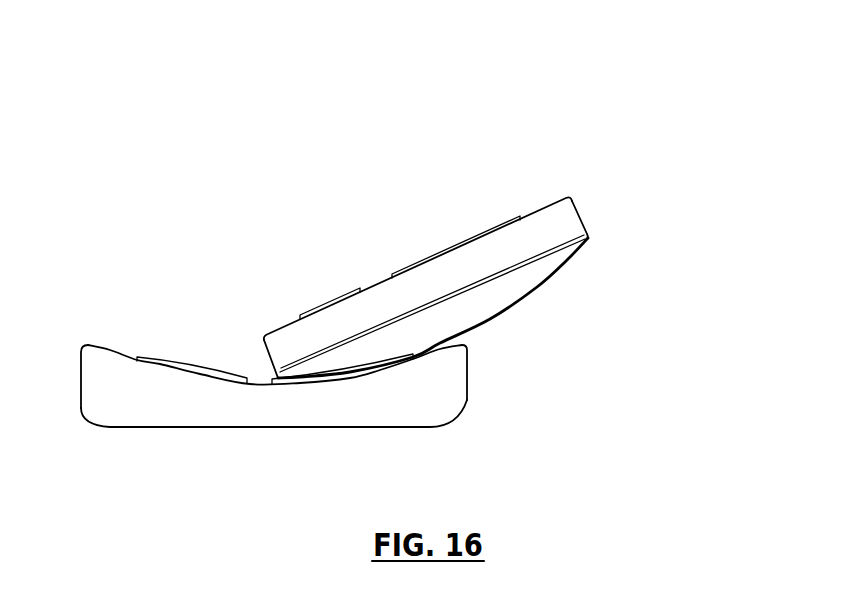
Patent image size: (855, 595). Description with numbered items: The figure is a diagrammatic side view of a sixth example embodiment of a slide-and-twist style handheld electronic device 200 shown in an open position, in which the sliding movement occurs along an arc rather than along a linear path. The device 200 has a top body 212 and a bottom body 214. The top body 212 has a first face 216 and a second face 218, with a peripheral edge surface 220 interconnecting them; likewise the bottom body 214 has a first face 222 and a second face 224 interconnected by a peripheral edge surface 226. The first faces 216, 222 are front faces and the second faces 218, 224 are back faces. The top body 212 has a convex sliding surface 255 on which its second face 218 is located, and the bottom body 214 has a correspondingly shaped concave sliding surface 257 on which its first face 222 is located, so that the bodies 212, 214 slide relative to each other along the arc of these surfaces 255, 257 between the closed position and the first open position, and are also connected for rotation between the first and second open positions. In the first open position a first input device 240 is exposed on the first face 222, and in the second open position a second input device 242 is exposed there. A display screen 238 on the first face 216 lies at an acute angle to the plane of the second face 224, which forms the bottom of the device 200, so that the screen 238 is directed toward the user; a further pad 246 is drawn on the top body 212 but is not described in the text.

The handheld electronic device 200 is at (631, 167).
The top body 212 is at (480, 247).
The bottom body 214 is at (306, 381).
The first face of the top body 216 is at (534, 211).
The second face of the top body 218 is at (518, 285).
The peripheral edge surface of the top body 220 is at (366, 313).
The first face of the bottom body 222 is at (110, 350).
The second face of the bottom body 224 is at (170, 428).
The peripheral edge surface of the bottom body 226 is at (305, 419).
The display screen 238 is at (458, 243).
The first input device 240 is at (184, 364).
The second input device 242 is at (300, 382).
The pad on top surface 246 is at (305, 317).
The convex sliding surface 255 is at (488, 320).
The concave sliding surface 257 is at (122, 356).